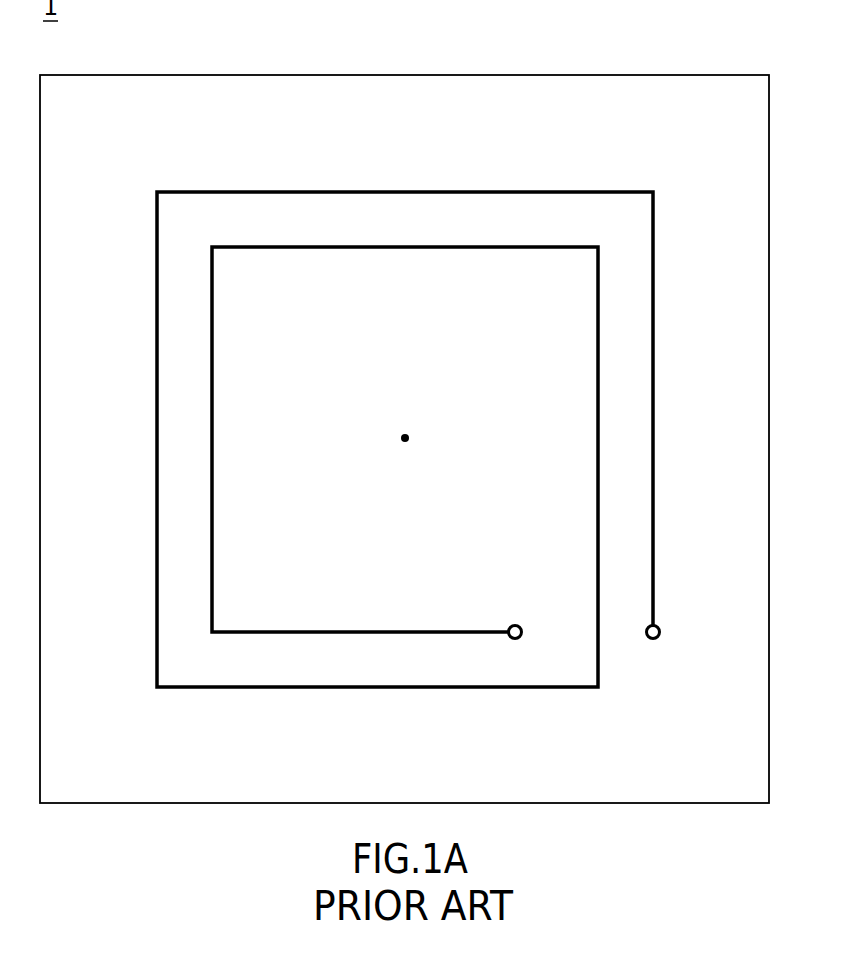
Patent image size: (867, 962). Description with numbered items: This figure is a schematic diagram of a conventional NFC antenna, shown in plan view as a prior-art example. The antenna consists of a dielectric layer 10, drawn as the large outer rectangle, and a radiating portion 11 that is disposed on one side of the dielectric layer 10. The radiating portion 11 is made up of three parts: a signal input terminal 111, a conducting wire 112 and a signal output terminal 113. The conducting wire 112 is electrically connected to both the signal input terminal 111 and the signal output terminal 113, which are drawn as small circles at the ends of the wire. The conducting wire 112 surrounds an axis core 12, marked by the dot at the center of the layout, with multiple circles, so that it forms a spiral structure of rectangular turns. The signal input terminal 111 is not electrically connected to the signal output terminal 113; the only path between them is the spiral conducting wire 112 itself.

The dielectric layer 10 is at (750, 123).
The radiating portion 11 is at (408, 492).
The signal input terminal 111 is at (515, 639).
The conducting wire 112 is at (483, 688).
The signal output terminal 113 is at (653, 639).
The axis core 12 is at (405, 434).